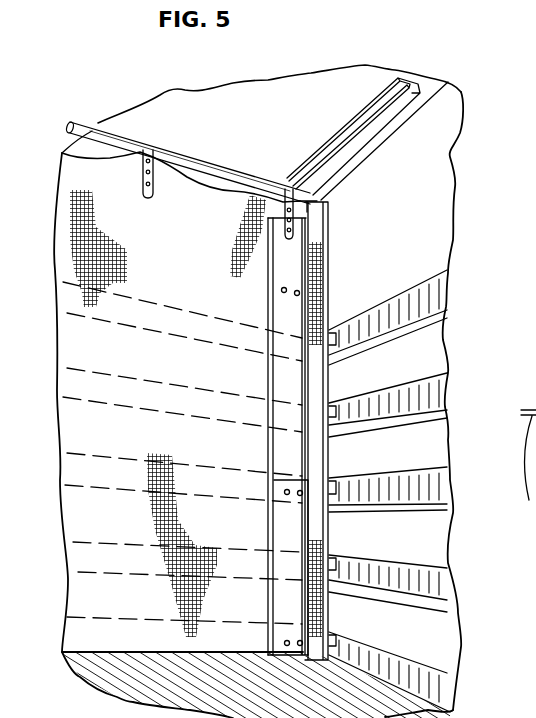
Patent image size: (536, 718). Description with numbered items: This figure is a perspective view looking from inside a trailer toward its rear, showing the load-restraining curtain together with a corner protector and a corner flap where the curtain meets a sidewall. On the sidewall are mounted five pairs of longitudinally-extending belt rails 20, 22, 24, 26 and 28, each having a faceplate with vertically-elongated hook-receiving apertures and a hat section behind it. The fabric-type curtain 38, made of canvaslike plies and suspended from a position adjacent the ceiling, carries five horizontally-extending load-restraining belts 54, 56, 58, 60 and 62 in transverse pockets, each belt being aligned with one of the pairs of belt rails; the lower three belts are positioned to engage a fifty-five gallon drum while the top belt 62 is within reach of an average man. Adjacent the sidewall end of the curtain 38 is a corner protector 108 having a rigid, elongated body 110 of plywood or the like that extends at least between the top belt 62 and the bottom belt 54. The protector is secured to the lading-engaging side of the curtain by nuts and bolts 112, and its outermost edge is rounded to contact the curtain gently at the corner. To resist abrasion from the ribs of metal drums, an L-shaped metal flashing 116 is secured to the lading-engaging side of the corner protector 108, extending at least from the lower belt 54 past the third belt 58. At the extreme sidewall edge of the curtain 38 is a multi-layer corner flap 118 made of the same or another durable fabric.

The belt rail 20 is at (463, 682).
The belt rail 22 is at (453, 580).
The belt rail 24 is at (455, 480).
The belt rail 26 is at (448, 387).
The belt rail 28 is at (453, 285).
The curtain 38 is at (174, 250).
The load-restraining belt 54 is at (142, 620).
The load-restraining belt 56 is at (133, 573).
The load-restraining belt 58 is at (133, 492).
The load-restraining belt 60 is at (137, 407).
The load-restraining belt 62 is at (129, 325).
The corner protector 108 is at (289, 436).
The elongated body 110 is at (273, 380).
The nuts and bolts 112 is at (299, 293).
The L-shaped metal flashing 116 is at (268, 517).
The corner flap 118 is at (318, 252).